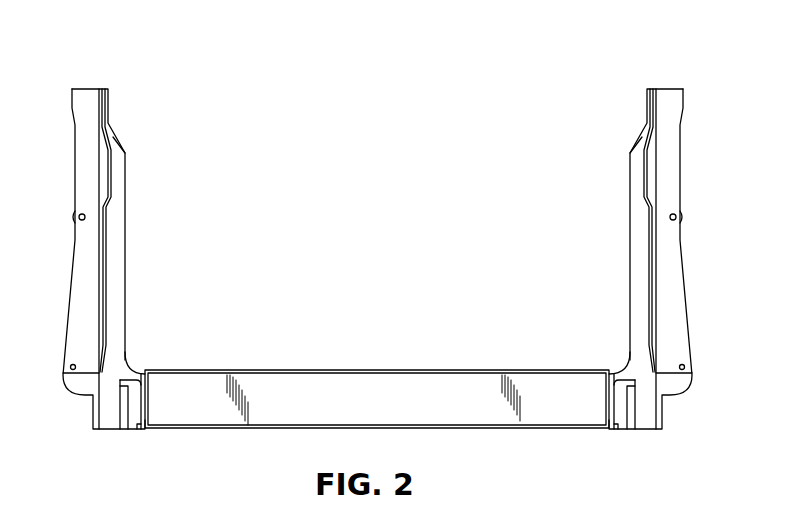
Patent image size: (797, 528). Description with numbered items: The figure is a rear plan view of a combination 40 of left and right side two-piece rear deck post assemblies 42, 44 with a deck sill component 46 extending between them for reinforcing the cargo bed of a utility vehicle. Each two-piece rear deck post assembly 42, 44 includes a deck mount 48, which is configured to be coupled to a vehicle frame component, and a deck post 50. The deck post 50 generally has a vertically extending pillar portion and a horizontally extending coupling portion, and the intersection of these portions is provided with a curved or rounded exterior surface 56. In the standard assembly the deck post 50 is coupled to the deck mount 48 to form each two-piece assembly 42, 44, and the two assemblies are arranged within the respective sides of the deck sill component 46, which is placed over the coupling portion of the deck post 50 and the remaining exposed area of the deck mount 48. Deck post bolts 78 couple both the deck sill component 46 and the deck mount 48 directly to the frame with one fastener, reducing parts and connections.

The combination 40 is at (589, 99).
The left side two-piece rear deck post assembly 42 is at (139, 137).
The right side two-piece rear deck post assembly 44 is at (707, 148).
The deck sill component 46 is at (388, 398).
The deck mount 48 is at (212, 445).
The deck post 50 is at (68, 192).
The curved or rounded exterior surface 56 is at (128, 371).
The deck post bolts 78 is at (209, 370).